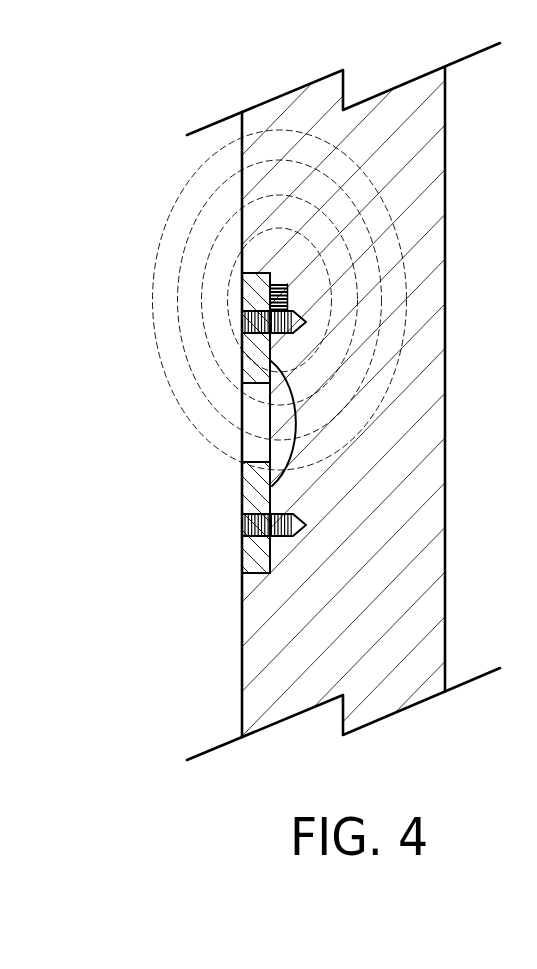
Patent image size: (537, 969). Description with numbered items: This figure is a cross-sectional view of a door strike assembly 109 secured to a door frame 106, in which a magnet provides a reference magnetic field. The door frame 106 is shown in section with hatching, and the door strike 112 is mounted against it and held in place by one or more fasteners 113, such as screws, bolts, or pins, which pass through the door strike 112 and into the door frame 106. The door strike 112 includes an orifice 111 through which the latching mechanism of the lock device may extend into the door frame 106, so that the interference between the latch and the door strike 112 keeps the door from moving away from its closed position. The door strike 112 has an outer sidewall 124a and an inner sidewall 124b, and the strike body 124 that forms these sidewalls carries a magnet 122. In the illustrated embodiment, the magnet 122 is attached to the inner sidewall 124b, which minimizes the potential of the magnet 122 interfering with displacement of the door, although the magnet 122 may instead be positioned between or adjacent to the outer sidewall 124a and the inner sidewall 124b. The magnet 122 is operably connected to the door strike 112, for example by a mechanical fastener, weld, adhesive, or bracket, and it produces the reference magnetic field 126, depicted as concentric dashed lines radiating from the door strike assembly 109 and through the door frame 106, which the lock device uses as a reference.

The door frame 106 is at (433, 182).
The door strike assembly 109 is at (222, 509).
The orifice 111 is at (257, 413).
The door strike 112 is at (250, 564).
The fasteners 113 is at (242, 322).
The magnet 122 is at (288, 302).
The mounting plate 124 is at (243, 293).
The outer sidewall 124a is at (242, 543).
The inner sidewall 124b is at (268, 558).
The reference magnetic field 126 is at (163, 233).